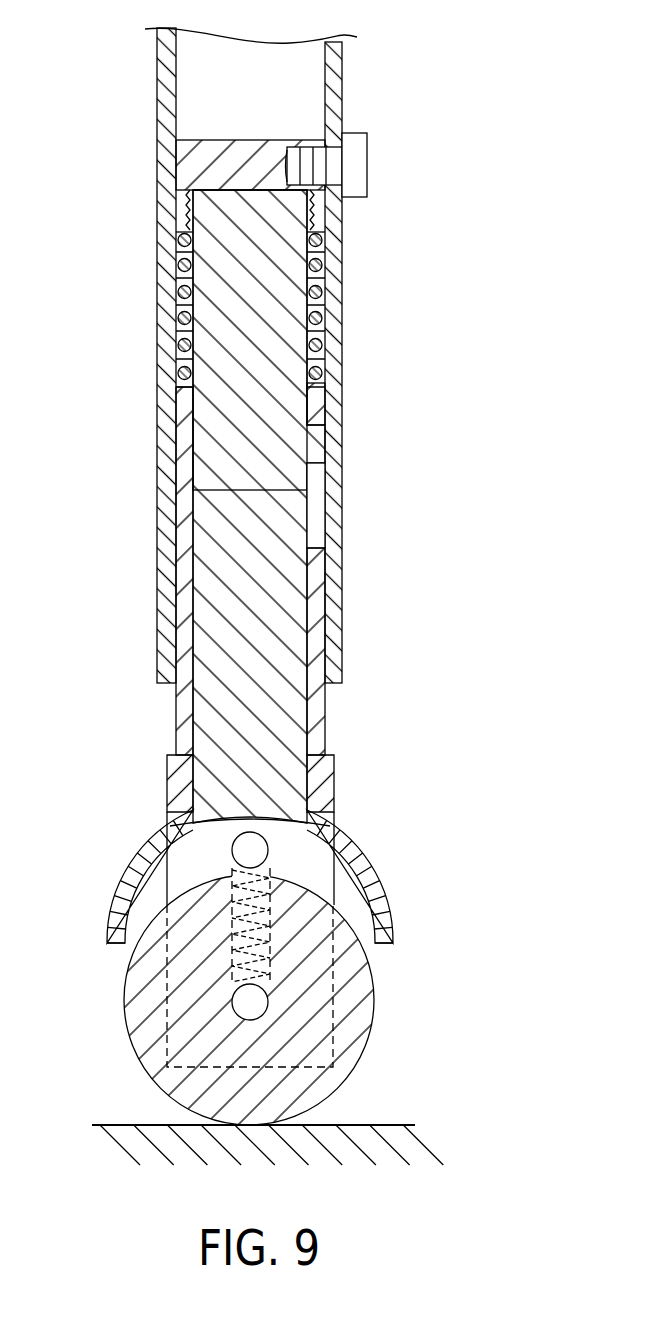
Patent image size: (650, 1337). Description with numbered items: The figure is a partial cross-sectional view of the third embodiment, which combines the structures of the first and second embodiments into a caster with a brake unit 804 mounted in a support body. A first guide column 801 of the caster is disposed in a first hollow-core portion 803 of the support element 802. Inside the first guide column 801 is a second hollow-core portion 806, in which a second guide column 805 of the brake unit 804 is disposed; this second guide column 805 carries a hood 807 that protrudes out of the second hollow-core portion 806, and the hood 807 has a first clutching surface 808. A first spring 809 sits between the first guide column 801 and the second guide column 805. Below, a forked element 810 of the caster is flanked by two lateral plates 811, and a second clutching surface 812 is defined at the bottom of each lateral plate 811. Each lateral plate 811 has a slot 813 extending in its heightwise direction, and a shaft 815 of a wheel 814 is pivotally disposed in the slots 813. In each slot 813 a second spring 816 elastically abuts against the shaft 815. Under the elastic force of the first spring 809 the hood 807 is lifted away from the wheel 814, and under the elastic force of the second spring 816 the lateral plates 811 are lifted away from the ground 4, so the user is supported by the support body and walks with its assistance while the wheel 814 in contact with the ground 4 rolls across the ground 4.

The ground 4 is at (92, 1125).
The first guide column 801 is at (183, 612).
The support element 802 is at (333, 97).
The first hollow-core portion 803 is at (203, 98).
The brake unit 804 is at (405, 872).
The second guide column 805 is at (298, 642).
The second hollow-core portion 806 is at (196, 490).
The hood 807 is at (343, 838).
The first clutching surface 808 is at (363, 905).
The first spring 809 is at (318, 290).
The forked element 810 is at (333, 762).
The lateral plates 811 is at (180, 868).
The second clutching surface 812 is at (285, 1085).
The slot 813 is at (235, 955).
The wheel 814 is at (258, 1005).
The shaft 815 is at (375, 1027).
The second spring 816 is at (352, 990).